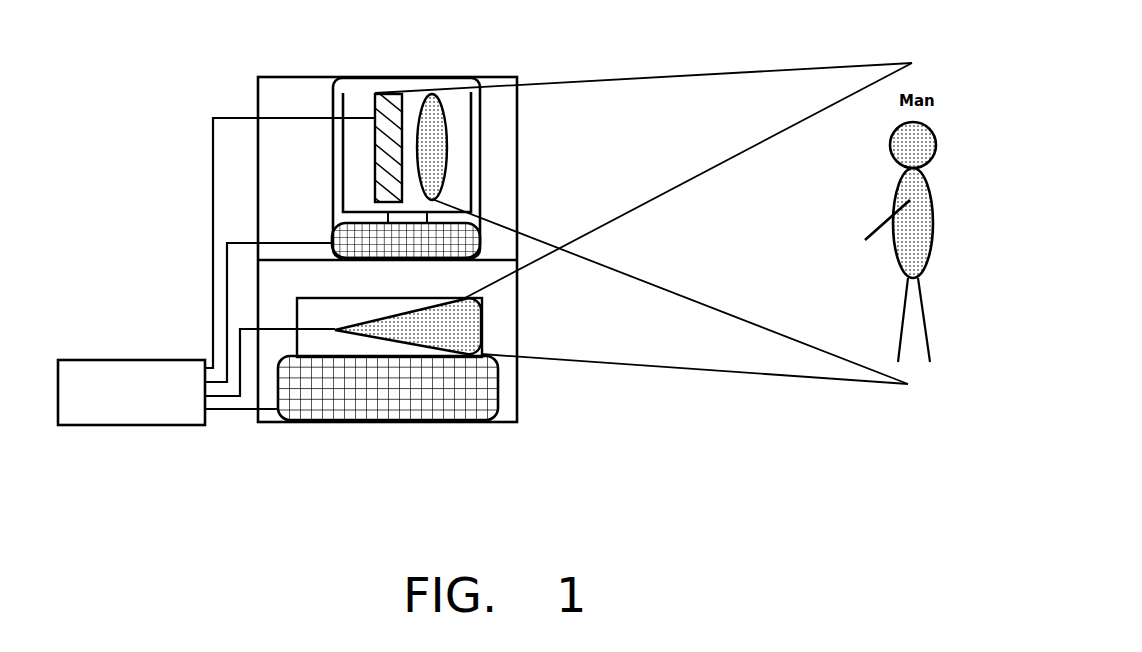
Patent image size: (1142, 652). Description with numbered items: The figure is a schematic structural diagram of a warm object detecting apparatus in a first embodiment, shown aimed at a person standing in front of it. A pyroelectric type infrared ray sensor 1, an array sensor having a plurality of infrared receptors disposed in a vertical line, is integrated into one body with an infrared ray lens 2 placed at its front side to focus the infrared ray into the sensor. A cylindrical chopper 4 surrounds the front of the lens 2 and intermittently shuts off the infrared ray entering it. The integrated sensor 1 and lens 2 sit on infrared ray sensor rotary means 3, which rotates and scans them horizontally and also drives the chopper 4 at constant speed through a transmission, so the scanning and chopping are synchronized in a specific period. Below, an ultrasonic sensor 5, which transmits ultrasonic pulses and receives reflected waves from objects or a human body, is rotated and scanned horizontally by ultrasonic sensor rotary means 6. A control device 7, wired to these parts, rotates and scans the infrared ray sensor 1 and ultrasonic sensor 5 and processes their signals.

The pyroelectric type infrared ray sensor 1 is at (385, 95).
The infrared ray lens 2 is at (443, 110).
The infrared ray sensor rotary means 3 is at (360, 230).
The cylindrical chopper 4 is at (338, 100).
The ultrasonic sensor 5 is at (483, 328).
The ultrasonic sensor rotary means 6 is at (373, 390).
The control device 7 is at (167, 395).